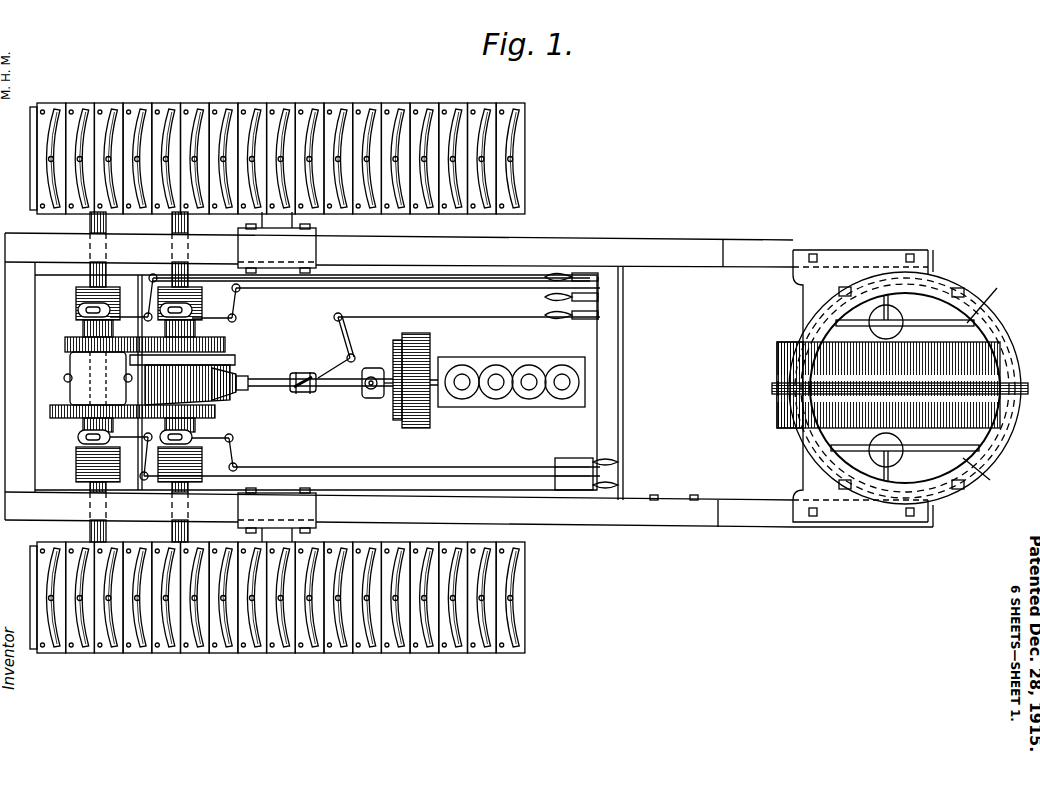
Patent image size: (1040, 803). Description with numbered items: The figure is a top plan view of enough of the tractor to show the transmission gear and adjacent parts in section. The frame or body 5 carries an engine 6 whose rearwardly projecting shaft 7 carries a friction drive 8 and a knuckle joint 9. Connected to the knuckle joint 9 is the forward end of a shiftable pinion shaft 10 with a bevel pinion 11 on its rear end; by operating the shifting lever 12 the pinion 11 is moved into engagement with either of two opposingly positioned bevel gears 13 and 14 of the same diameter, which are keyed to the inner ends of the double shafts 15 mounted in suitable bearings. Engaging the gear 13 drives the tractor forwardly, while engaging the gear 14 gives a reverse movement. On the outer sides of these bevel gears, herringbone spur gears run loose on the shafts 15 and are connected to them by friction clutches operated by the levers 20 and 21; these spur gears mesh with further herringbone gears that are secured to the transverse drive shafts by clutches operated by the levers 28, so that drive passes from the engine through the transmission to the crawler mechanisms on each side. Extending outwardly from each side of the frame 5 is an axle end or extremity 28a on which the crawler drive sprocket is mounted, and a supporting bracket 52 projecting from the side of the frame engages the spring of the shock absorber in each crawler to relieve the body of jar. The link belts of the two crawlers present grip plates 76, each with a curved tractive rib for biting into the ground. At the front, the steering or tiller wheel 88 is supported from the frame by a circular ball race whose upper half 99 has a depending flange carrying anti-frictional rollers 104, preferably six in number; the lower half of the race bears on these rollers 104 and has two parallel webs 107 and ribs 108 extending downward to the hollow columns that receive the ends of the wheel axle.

The frame or body 5 is at (684, 250).
The engine 6 is at (511, 399).
The rearwardly projecting shaft 7 is at (432, 405).
The friction drive 8 is at (396, 408).
The knuckle joint 9 is at (368, 392).
The shiftable pinion shaft 10 is at (300, 388).
The bevel pinion 11 is at (242, 380).
The shifting lever 12 is at (340, 346).
The bevel gear 13 is at (153, 397).
The bevel gear 14 is at (216, 356).
The shafts 15 is at (200, 498).
The lever 20 is at (236, 441).
The lever 21 is at (232, 302).
The levers 28 is at (128, 340).
The axle end or extremity 28a is at (172, 226).
The supporting bracket 52 is at (296, 232).
The grip plate 76 is at (296, 98).
The steering or tiller wheel 88 is at (900, 385).
The upper half of ball race 99 is at (803, 362).
The anti-frictional rollers 104 is at (838, 302).
The webs 107 is at (995, 303).
The ribs 108 is at (987, 483).